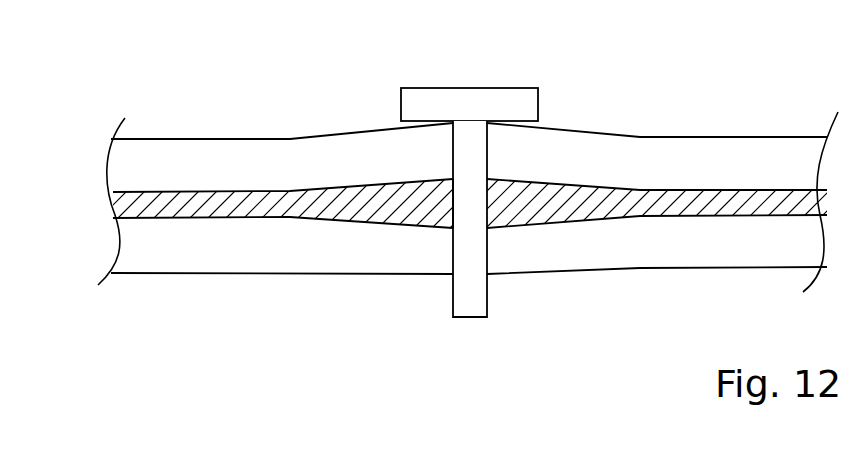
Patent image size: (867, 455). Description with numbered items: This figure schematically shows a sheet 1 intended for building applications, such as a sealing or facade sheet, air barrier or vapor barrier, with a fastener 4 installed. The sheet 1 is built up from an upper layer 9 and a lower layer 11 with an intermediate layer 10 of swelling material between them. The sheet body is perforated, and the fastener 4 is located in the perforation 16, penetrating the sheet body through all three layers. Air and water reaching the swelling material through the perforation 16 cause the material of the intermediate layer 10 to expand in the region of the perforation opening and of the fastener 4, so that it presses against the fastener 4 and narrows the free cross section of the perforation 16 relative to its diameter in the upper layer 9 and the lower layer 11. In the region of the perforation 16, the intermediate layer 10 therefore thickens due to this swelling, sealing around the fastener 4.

The sheet 1 is at (690, 107).
The fastener 4 is at (503, 98).
The upper layer 9 is at (205, 162).
The intermediate layer 10 is at (123, 208).
The lower layer 11 is at (203, 250).
The perforation 16 is at (462, 193).